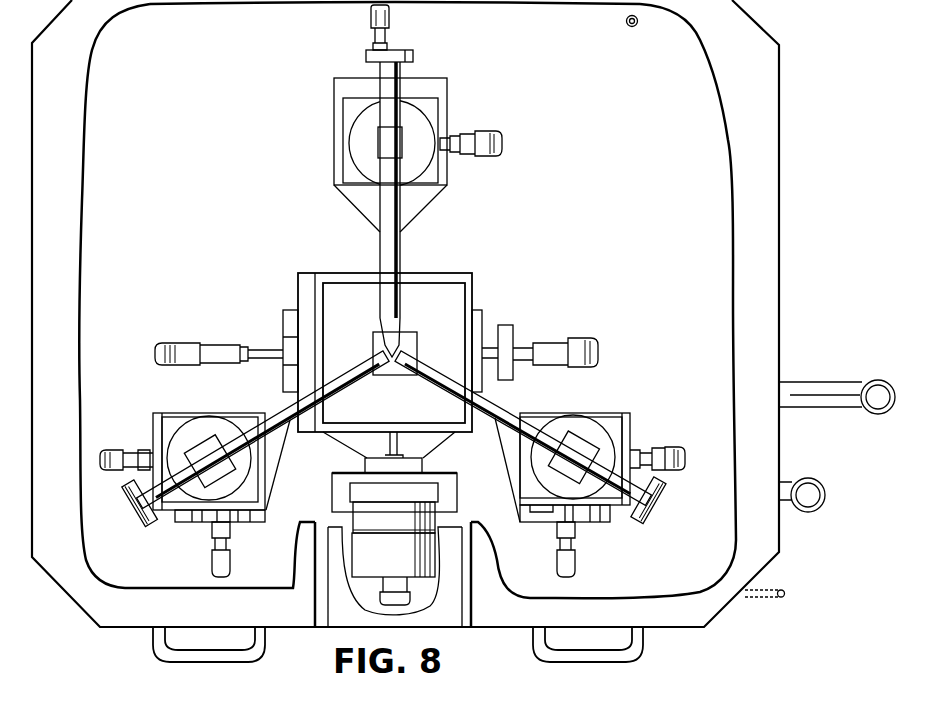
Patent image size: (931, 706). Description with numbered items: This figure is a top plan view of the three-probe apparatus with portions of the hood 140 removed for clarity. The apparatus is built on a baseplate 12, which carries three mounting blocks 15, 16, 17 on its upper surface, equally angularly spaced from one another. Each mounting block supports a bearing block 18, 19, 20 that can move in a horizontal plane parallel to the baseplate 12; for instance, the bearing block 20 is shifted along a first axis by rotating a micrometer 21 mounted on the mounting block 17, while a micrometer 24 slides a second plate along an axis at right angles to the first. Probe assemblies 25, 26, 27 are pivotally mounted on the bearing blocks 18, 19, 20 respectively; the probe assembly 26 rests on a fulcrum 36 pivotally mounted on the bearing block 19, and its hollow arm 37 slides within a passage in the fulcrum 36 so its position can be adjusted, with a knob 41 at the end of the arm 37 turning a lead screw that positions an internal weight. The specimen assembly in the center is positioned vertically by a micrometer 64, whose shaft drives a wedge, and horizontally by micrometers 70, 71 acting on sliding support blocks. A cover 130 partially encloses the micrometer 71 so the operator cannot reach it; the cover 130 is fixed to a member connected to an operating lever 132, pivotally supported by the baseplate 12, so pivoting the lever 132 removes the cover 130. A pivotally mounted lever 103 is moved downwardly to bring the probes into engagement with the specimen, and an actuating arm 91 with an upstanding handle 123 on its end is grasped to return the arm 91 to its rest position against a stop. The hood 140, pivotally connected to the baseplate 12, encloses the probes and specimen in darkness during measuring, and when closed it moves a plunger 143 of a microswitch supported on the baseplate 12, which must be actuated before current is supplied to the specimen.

The baseplate 12 is at (189, 101).
The hood 140 is at (763, 152).
The cover 130 is at (340, 622).
The plunger 143 is at (626, 25).
The bearing block 19 is at (332, 136).
The knob 41 is at (414, 52).
The fulcrum 36 is at (402, 138).
The mounting block 16 is at (350, 212).
The hollow arm 37 is at (401, 262).
The probe assembly 26 is at (378, 255).
The micrometer 64 is at (178, 343).
The micrometer 70 is at (583, 340).
The probe assembly 25 is at (280, 400).
The probe assembly 27 is at (504, 400).
The bearing block 18 is at (150, 427).
The bearing block 20 is at (618, 412).
The micrometer 21 is at (556, 568).
The micrometer 24 is at (672, 448).
The mounting block 15 is at (290, 450).
The mounting block 17 is at (498, 448).
The micrometer 71 is at (411, 596).
The actuating arm 91 is at (795, 380).
The upstanding handle 123 is at (875, 416).
The lever 103 is at (788, 482).
The operating lever 132 is at (768, 600).